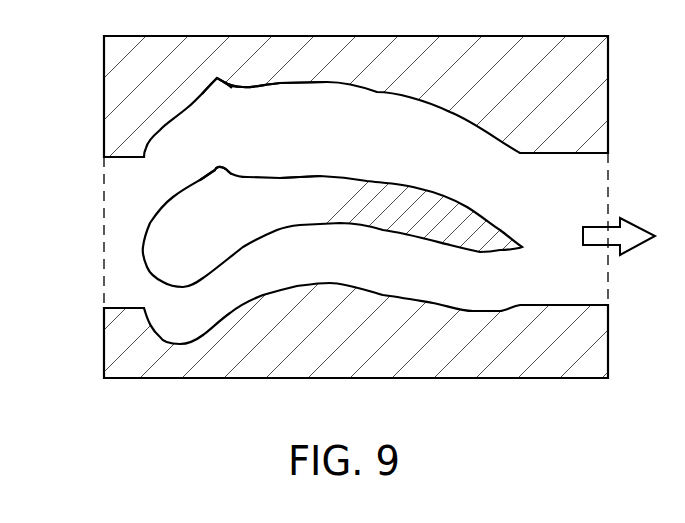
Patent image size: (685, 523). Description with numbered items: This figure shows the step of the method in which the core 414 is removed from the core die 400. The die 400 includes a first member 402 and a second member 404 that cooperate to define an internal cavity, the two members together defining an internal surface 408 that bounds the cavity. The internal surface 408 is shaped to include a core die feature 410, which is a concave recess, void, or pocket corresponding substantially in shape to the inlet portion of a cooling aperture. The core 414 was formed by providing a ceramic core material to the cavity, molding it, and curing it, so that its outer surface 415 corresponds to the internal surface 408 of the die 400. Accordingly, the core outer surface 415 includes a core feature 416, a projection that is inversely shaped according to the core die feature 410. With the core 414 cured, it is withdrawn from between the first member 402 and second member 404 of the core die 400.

The die 400 is at (93, 36).
The first member 402 is at (598, 97).
The second member 404 is at (598, 340).
The internal surface 408 is at (378, 92).
The core die feature 410 is at (221, 85).
The core 414 is at (372, 191).
The outer surface 415 is at (299, 175).
The core feature 416 is at (209, 166).